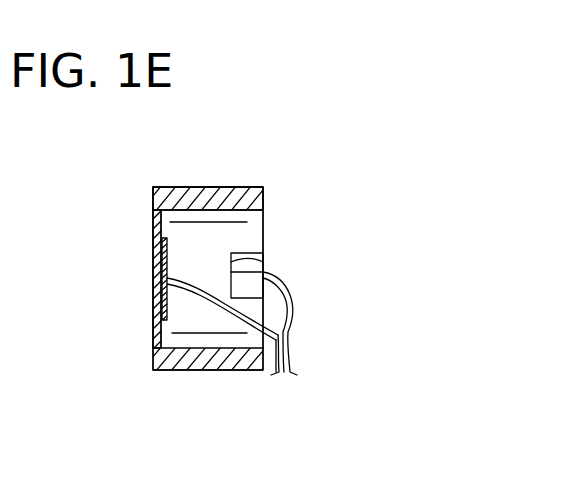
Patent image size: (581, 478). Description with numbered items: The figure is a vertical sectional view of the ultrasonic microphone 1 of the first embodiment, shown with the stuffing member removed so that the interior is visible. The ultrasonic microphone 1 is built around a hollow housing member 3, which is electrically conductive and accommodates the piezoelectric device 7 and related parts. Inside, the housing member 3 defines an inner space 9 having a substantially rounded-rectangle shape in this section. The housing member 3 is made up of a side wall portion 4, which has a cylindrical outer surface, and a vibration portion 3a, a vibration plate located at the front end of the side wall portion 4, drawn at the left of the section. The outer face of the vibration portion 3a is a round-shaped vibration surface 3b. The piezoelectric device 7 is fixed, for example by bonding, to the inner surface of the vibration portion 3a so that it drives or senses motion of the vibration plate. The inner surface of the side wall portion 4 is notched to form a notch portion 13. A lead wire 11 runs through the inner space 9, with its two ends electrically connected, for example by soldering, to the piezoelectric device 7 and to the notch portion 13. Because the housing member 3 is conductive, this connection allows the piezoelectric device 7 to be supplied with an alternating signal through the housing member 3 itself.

The ultrasonic microphone 1 is at (297, 147).
The housing member 3 is at (187, 188).
The vibration portion 3a is at (153, 222).
The vibration surface 3b is at (153, 311).
The side wall portion 4 is at (218, 188).
The piezoelectric device 7 is at (167, 305).
The inner space 9 is at (243, 240).
The lead wire 11 is at (290, 338).
The notch portion 13 is at (263, 262).